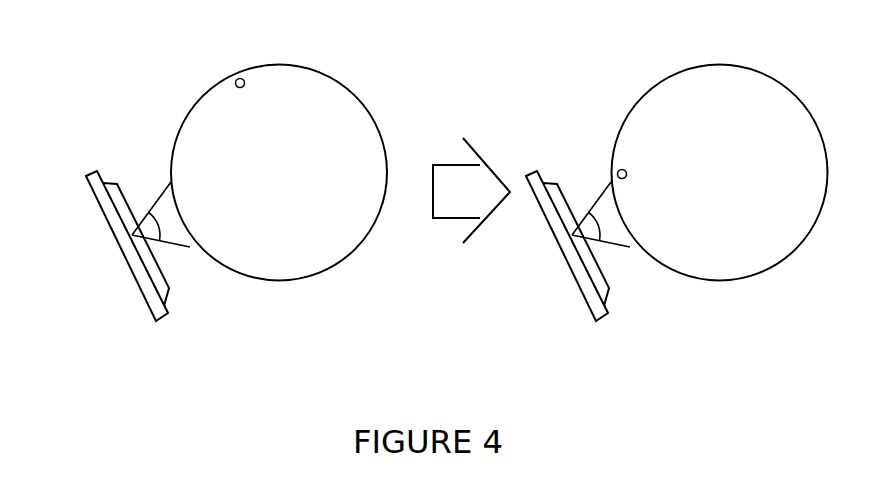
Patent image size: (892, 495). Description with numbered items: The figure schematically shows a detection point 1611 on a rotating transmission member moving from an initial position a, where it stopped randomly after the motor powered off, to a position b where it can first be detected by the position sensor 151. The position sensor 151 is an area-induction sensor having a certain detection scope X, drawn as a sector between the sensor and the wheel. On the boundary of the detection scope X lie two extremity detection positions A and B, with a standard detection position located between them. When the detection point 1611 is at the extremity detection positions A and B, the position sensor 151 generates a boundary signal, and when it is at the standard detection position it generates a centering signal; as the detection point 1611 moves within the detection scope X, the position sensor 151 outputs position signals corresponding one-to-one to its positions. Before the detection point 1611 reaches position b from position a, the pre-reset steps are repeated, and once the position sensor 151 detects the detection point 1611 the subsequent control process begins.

The detection point 1611 is at (375, 107).
The position sensor 151 is at (322, 252).
The initial position a is at (248, 83).
The position b is at (630, 173).
The extremity detection position A is at (371, 198).
The extremity detection position B is at (388, 252).
The detection scope X is at (382, 227).